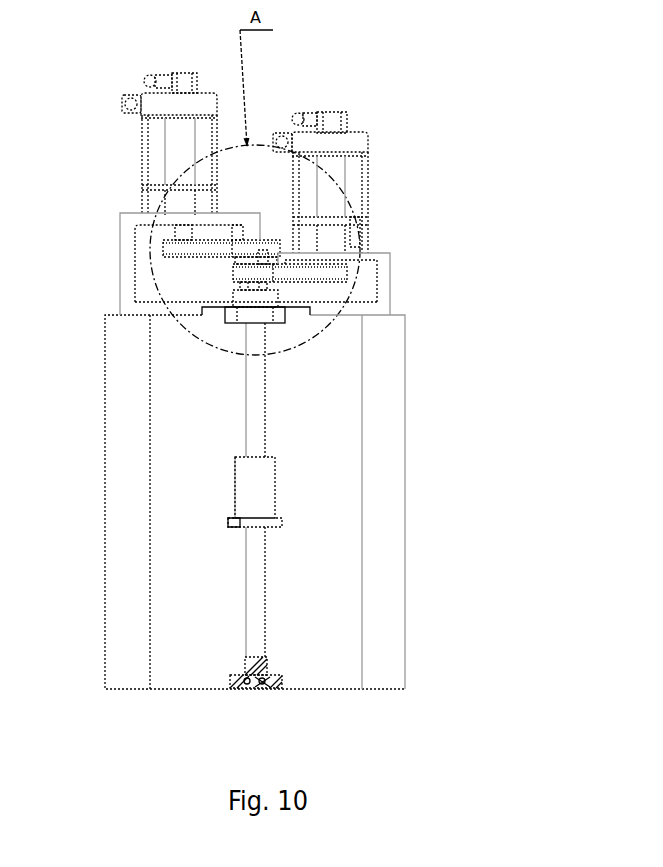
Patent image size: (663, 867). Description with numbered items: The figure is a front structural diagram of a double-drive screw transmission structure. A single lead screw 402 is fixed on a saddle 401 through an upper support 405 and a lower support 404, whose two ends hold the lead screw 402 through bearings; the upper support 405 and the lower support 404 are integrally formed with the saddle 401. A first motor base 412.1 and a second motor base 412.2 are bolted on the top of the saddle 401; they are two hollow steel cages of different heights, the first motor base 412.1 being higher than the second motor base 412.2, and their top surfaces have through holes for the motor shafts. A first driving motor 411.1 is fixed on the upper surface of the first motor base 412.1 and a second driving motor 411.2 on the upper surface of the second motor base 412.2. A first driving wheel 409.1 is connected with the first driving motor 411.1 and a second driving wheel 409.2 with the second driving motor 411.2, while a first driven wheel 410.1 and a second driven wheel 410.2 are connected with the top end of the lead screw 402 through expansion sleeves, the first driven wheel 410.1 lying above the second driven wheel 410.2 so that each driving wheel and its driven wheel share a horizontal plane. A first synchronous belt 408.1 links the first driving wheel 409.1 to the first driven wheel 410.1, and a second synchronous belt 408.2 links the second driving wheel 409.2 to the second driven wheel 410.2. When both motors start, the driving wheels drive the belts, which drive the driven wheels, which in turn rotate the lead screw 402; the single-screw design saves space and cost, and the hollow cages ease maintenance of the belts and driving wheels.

The saddle 401 is at (125, 618).
The lead screw 402 is at (257, 555).
The lower support 404 is at (232, 686).
The upper support 405 is at (252, 317).
The first synchronous belt 408.1 is at (207, 248).
The second synchronous belt 408.2 is at (297, 277).
The first driving wheel 409.1 is at (178, 240).
The second driving wheel 409.2 is at (340, 265).
The first driven wheel 410.1 is at (252, 240).
The second driven wheel 410.2 is at (262, 263).
The first driving motor 411.1 is at (187, 148).
The second driving motor 411.2 is at (335, 178).
The first motor base 412.1 is at (240, 216).
The second motor base 412.2 is at (380, 281).